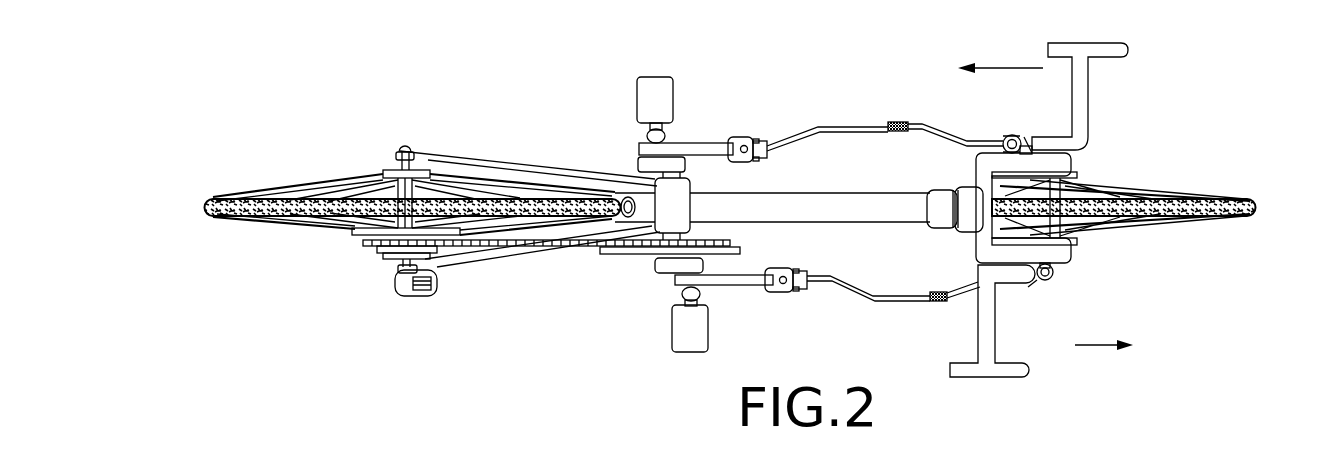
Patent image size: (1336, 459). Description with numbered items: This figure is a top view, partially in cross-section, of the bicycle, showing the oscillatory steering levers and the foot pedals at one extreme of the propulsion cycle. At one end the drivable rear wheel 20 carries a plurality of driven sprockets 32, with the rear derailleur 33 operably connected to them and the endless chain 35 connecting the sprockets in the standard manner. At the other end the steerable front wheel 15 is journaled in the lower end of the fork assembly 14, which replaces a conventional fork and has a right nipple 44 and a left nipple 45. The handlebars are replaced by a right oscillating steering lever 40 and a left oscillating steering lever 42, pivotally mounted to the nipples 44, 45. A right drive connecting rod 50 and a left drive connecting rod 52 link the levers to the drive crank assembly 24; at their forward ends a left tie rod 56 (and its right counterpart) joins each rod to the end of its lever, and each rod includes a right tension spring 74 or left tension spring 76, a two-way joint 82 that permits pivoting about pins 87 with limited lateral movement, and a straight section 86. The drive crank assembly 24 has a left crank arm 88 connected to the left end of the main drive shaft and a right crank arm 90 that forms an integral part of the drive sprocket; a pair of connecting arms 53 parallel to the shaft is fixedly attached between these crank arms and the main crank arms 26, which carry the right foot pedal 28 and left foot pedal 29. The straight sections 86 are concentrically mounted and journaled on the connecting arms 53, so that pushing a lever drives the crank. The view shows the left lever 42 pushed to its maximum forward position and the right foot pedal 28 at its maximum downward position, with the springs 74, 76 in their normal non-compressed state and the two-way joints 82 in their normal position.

The drivable rear wheel 20 is at (213, 197).
The steerable front wheel 15 is at (1245, 222).
The fork assembly 14 is at (1073, 164).
The left oscillating steering lever 42 is at (1088, 102).
The left nipple 45 is at (1029, 152).
The left tie rod 56 is at (1001, 134).
The left tension spring 76 is at (898, 120).
The left drive connecting rod 52 is at (858, 110).
The two-way joint 82 is at (742, 136).
The straight section 86 is at (693, 142).
The left foot pedal 29 is at (657, 76).
The main crank arms 26 is at (647, 133).
The left crank arm 88 is at (640, 162).
The connecting arms 53 is at (640, 160).
The driven sprockets 32 is at (355, 240).
The rear derailleur 33 is at (418, 296).
The endless chain 35 is at (575, 256).
The right crank arm 90 is at (657, 263).
The drive crank assembly 24 is at (650, 280).
The right foot pedal 28 is at (710, 328).
The pins 87 is at (805, 272).
The right drive connecting rod 50 is at (865, 308).
The right tension spring 74 is at (935, 303).
The right oscillating steering lever 40 is at (995, 325).
The right nipple 44 is at (1047, 283).